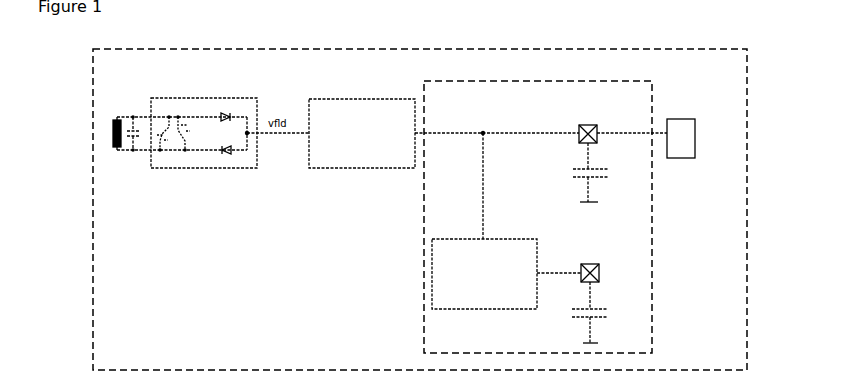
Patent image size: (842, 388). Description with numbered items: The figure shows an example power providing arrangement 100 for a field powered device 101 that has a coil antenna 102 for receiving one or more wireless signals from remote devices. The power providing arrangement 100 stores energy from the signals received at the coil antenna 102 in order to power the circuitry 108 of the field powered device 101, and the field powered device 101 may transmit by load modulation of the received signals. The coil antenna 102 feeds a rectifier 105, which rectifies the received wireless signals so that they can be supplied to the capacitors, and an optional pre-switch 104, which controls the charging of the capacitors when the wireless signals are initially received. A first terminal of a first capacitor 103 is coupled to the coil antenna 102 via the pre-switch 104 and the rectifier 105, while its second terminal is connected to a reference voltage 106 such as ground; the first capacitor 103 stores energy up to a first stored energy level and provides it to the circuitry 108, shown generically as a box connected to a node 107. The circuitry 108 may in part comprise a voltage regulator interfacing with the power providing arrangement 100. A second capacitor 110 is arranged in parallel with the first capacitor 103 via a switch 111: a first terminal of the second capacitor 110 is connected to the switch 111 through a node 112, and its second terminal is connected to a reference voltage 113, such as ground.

The field powered device 101 is at (417, 48).
The power providing arrangement 100 is at (450, 80).
The coil antenna 102 is at (132, 114).
The rectifier 105 is at (229, 98).
The pre-switch 104 is at (348, 98).
The node 107 is at (598, 141).
The first capacitor 103 is at (572, 170).
The reference voltage 106 is at (598, 203).
The circuitry 108 is at (695, 133).
The switch 111 is at (487, 309).
The node 112 is at (600, 272).
The second capacitor 110 is at (606, 310).
The reference voltage 113 is at (584, 343).